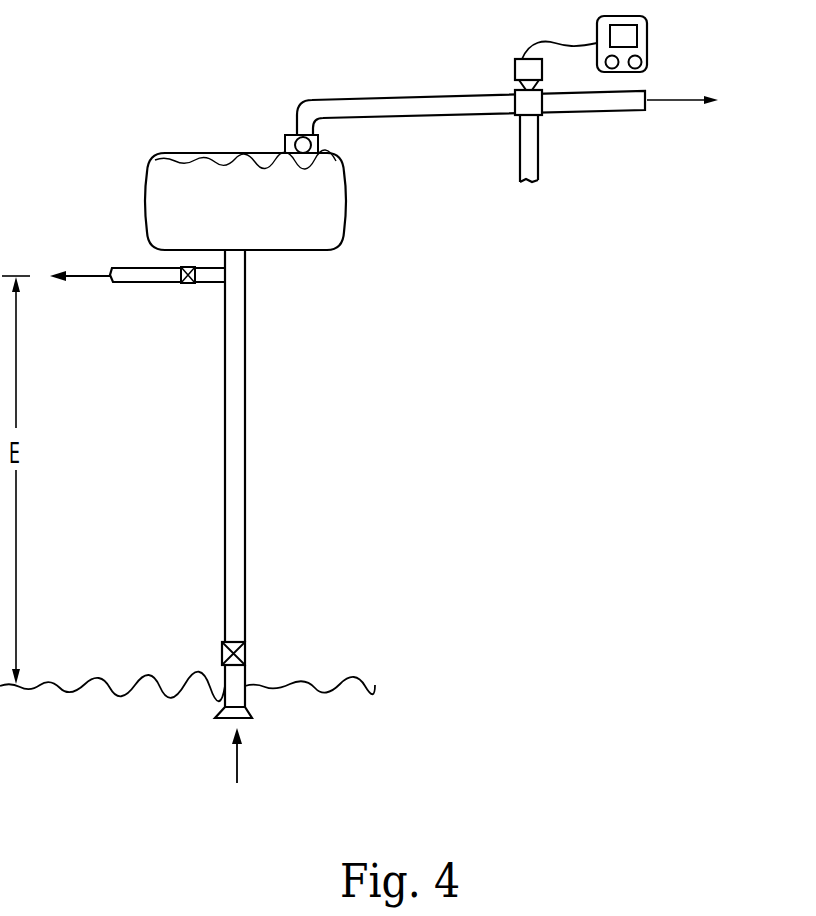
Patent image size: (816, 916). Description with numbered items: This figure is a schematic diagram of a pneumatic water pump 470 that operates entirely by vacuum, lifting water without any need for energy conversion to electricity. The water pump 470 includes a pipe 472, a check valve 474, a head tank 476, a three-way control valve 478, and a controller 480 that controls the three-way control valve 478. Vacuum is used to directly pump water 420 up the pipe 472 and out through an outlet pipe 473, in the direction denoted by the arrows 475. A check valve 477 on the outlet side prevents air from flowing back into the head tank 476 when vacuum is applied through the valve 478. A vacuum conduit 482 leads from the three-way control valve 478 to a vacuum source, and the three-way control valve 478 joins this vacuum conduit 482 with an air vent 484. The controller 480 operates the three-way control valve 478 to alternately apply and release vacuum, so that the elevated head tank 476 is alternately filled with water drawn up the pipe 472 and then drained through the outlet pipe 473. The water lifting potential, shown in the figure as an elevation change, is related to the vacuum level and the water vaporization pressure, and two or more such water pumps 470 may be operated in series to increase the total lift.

The water 420 is at (409, 728).
The water pump 470 is at (466, 608).
The pipe 472 is at (246, 465).
The outlet pipe 473 is at (140, 283).
The check valve 474 is at (247, 653).
The arrows 475 is at (90, 273).
The head tank 476 is at (326, 235).
The check valve 477 is at (190, 283).
The three-way control valve 478 is at (517, 103).
The controller 480 is at (647, 36).
The vacuum conduit 482 is at (613, 111).
The air vent 484 is at (538, 165).